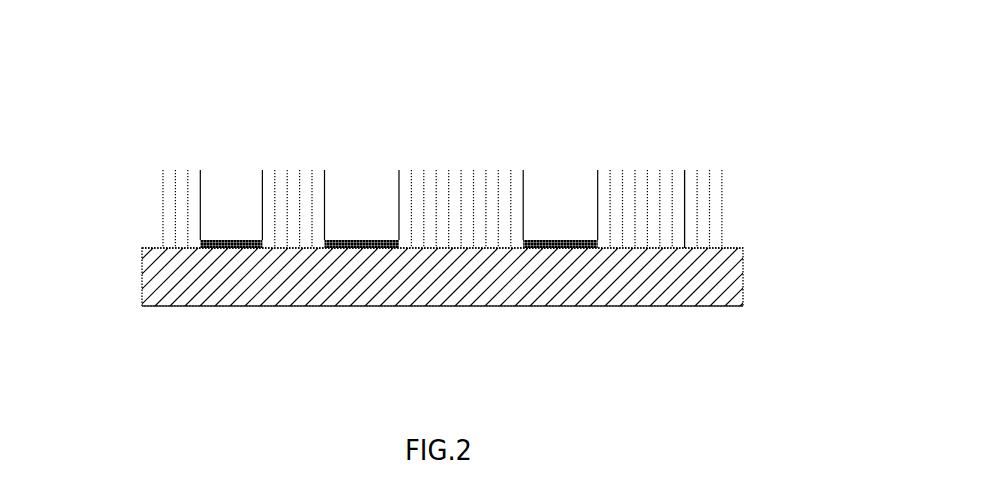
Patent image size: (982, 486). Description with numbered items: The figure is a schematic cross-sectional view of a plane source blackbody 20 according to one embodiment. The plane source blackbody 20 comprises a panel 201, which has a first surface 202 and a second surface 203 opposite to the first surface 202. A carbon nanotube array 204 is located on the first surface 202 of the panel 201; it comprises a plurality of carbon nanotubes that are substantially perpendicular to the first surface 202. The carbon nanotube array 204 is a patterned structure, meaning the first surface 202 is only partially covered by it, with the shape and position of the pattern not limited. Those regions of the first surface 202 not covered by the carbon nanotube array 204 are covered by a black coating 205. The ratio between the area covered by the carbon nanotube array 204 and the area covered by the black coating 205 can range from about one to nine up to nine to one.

The plane source blackbody 20 is at (445, 101).
The panel 201 is at (687, 290).
The first surface 202 is at (150, 243).
The second surface 203 is at (160, 307).
The carbon nanotube array 204 is at (695, 182).
The black coating 205 is at (240, 238).